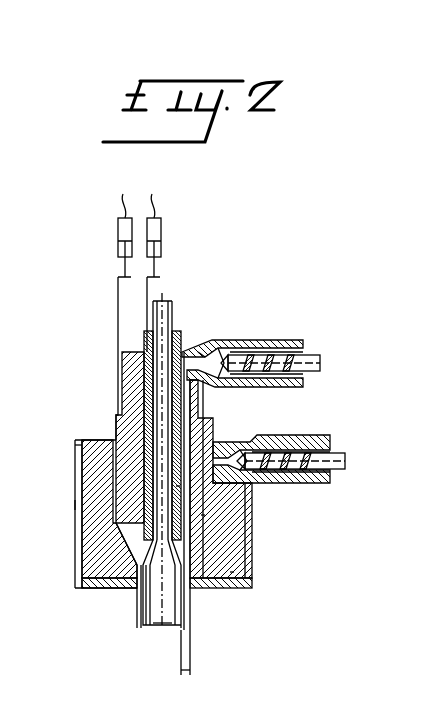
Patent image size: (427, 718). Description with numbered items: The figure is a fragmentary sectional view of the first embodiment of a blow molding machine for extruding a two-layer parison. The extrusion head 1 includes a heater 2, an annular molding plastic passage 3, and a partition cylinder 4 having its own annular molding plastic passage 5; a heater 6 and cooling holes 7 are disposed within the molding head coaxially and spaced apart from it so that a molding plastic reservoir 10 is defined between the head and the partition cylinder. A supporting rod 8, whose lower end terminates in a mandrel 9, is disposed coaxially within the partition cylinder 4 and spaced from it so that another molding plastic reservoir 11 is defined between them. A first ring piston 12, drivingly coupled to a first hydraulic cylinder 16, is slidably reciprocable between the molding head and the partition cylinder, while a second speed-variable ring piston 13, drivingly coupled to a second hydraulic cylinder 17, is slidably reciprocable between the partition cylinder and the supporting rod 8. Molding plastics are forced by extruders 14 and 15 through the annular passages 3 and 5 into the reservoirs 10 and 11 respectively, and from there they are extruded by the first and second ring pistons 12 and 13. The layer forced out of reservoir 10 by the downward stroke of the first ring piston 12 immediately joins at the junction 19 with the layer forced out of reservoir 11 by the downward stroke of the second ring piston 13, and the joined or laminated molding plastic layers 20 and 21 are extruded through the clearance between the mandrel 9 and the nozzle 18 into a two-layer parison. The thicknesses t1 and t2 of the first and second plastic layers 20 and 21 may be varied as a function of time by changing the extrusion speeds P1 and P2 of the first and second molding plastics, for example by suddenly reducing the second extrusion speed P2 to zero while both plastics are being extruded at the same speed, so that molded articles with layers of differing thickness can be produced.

The extrusion head 1 is at (75, 503).
The heater 2 is at (78, 440).
The annular molding plastic passage 3 is at (76, 458).
The partition cylinder 4 is at (228, 552).
The annular molding plastic passage 5 is at (138, 366).
The heater 6 is at (200, 354).
The cooling holes 7 is at (122, 352).
The supporting rod 8 is at (169, 318).
The mandrel 9 is at (152, 626).
The molding plastic reservoir 10 is at (98, 527).
The molding plastic reservoir 11 is at (104, 553).
The first ring piston 12 is at (178, 488).
The second speed-variable ring piston 13 is at (203, 515).
The extruder 14 is at (322, 436).
The extruder 15 is at (292, 340).
The first hydraulic cylinder 16 is at (125, 306).
The second hydraulic cylinder 17 is at (160, 262).
The nozzle 18 is at (245, 590).
The junction 19 is at (94, 580).
The first molding plastic layer 20 is at (137, 612).
The second molding plastic layer 21 is at (142, 598).
The extrusion speed of first molding plastic P1 is at (232, 572).
The extrusion speed of second molding plastic P2 is at (191, 587).
The thickness of first plastic layer t1 is at (166, 645).
The thickness of second plastic layer t2 is at (160, 662).